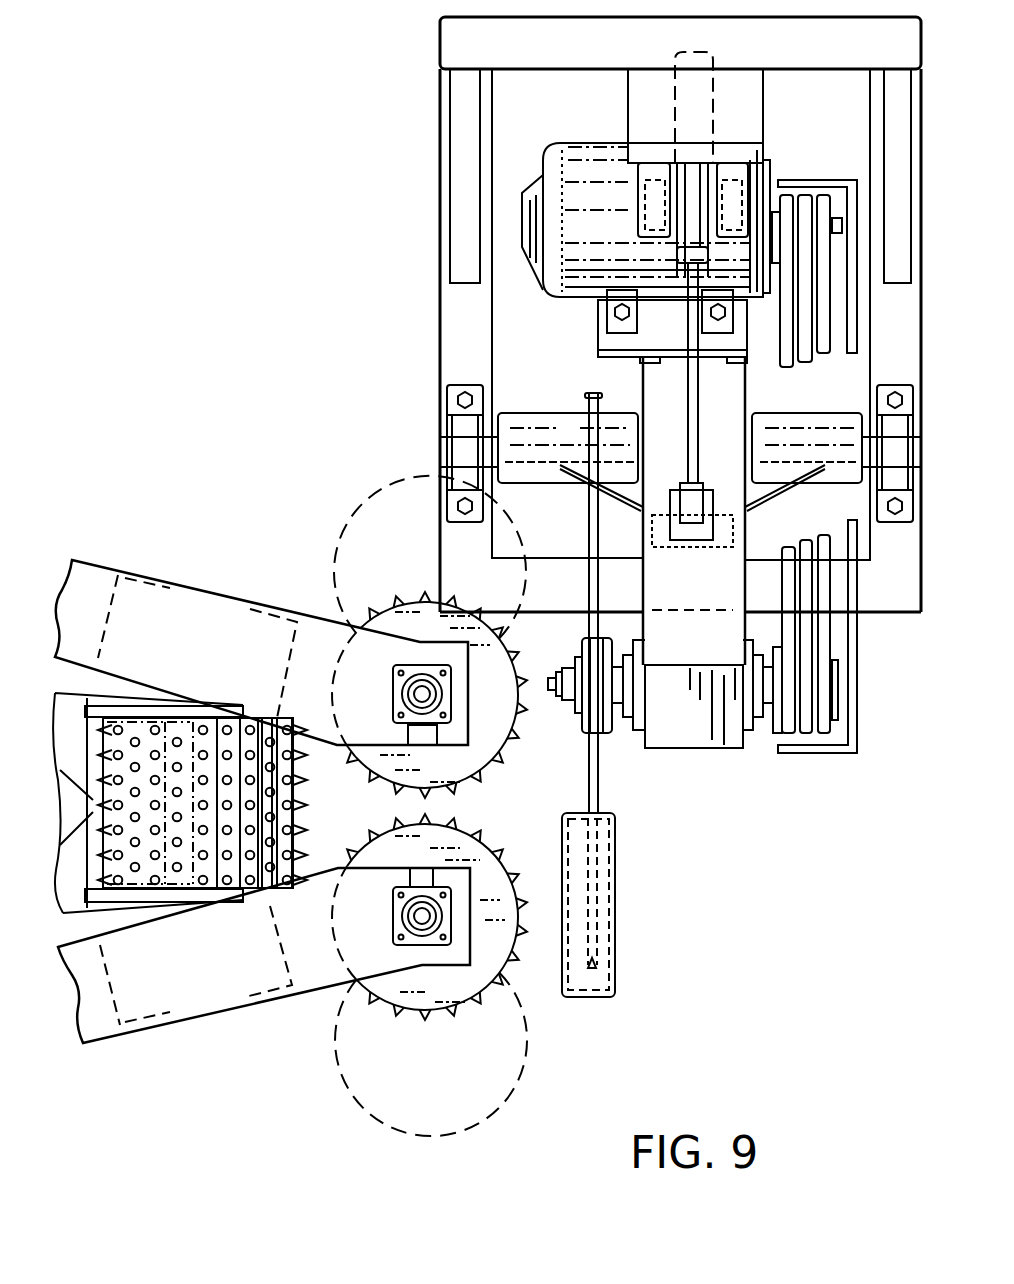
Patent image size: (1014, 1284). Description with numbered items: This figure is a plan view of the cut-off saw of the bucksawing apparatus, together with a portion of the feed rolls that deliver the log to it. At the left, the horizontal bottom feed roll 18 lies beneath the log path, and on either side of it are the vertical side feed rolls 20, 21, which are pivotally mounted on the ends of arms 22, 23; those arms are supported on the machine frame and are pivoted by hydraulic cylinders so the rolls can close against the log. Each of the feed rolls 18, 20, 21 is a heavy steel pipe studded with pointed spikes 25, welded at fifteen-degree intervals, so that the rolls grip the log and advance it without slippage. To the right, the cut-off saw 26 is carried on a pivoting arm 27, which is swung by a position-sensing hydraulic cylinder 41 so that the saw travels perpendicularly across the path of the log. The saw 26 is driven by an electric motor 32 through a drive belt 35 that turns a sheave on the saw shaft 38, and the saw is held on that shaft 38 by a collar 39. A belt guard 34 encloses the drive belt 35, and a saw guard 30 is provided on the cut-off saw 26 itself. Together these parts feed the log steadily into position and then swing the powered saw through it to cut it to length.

The horizontal bottom feed roll 18 is at (182, 877).
The vertical side feed roll 20 is at (410, 600).
The vertical side feed roll 21 is at (380, 1008).
The arm 22 is at (188, 586).
The arm 23 is at (175, 1031).
The spikes 25 is at (306, 787).
The cut-off saw 26 is at (603, 790).
The pivoting arm 27 is at (697, 760).
The saw guard 30 is at (615, 998).
The electric motor 32 is at (577, 140).
The belt guard 34 is at (799, 178).
The drive belt 35 is at (803, 366).
The shaft 38 is at (554, 678).
The collar 39 is at (580, 730).
The position-sensing hydraulic cylinder 41 is at (682, 383).